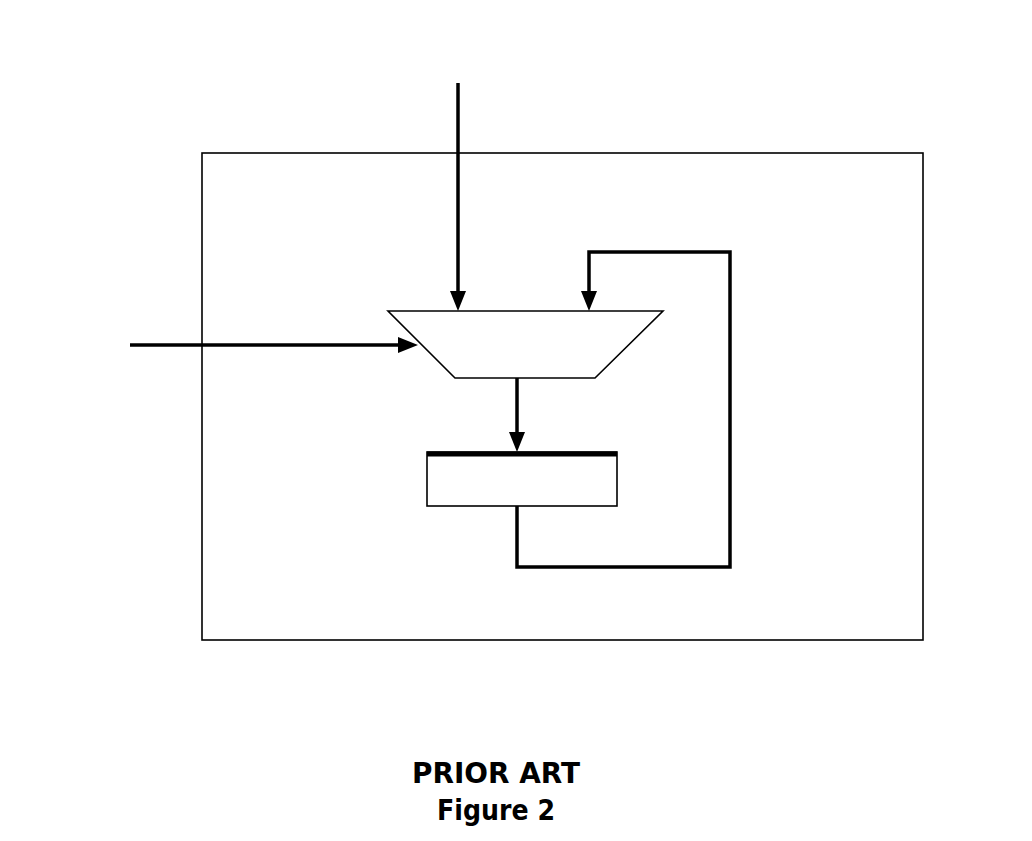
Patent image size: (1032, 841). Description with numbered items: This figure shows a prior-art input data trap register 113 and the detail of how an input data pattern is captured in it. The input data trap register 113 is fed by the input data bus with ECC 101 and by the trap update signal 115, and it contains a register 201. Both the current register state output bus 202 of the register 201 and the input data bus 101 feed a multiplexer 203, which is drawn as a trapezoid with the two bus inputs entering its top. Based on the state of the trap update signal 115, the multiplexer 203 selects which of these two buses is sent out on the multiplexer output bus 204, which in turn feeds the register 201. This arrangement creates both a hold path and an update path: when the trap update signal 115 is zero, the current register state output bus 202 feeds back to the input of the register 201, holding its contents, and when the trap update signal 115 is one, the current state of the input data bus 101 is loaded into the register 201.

The input data bus with ECC 101 is at (465, 120).
The input data trap register 113 is at (255, 210).
The trap update signal 115 is at (190, 337).
The register 201 is at (420, 477).
The current register state output bus 202 is at (735, 400).
The multiplexer 203 is at (437, 360).
The multiplexer output bus 204 is at (505, 402).